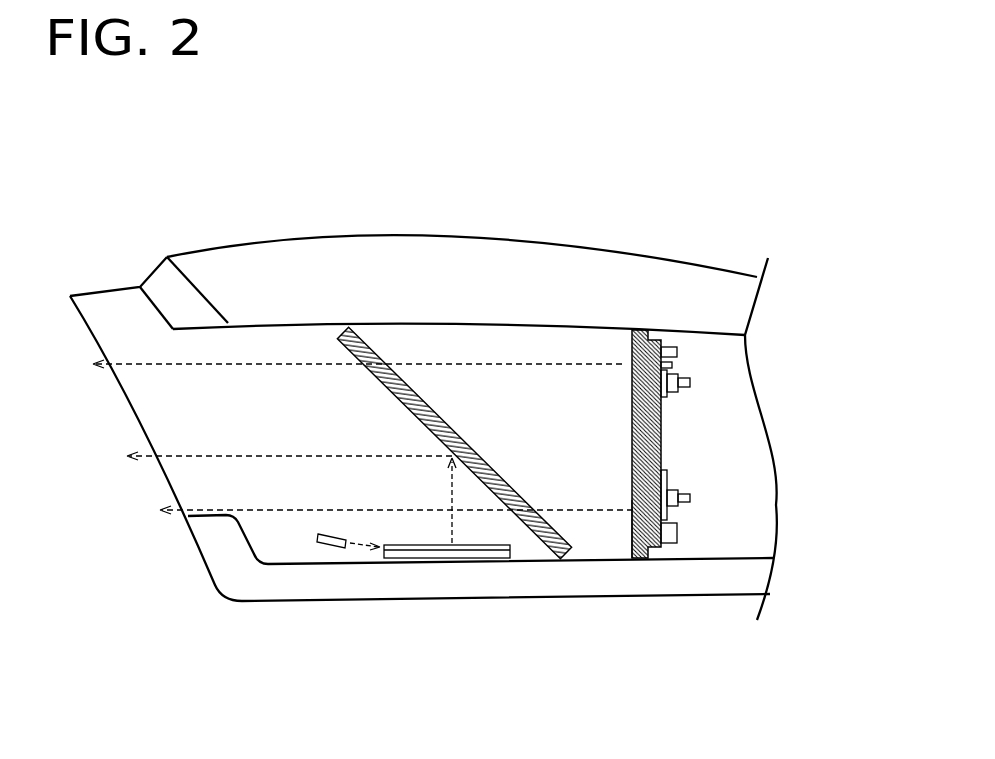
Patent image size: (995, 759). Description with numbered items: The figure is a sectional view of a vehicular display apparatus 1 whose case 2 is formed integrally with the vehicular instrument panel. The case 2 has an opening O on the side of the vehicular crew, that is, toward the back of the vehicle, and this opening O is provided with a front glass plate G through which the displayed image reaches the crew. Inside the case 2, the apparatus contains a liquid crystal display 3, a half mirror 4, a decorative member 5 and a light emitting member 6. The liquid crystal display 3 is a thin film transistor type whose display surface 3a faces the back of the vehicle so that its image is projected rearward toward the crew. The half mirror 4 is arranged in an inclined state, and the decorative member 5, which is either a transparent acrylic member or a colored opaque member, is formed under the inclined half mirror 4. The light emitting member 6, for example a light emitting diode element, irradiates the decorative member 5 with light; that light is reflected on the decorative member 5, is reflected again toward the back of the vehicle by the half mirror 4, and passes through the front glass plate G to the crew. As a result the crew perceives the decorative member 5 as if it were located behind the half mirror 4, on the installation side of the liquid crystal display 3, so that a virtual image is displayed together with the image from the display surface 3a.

The vehicular display apparatus 1 is at (657, 223).
The case 2 is at (500, 253).
The liquid crystal display 3 is at (662, 547).
The display surface 3a is at (635, 520).
The half mirror 4 is at (535, 537).
The decorative member 5 is at (408, 558).
The light emitting member 6 is at (330, 546).
The opening O is at (178, 417).
The front glass plate G is at (172, 485).